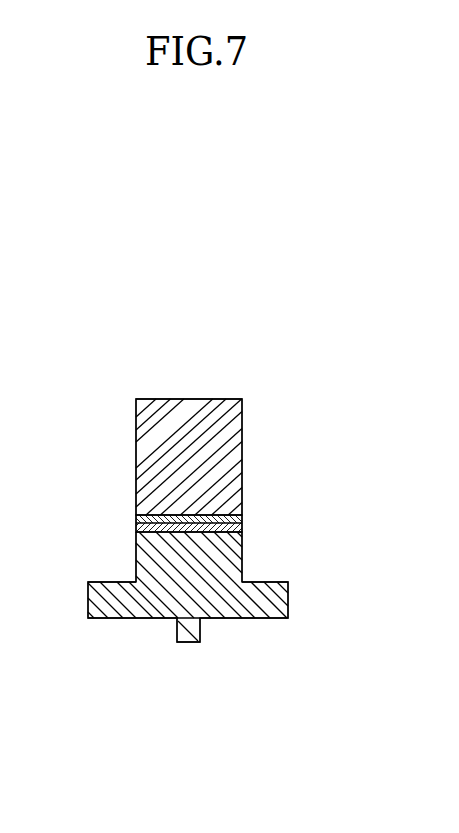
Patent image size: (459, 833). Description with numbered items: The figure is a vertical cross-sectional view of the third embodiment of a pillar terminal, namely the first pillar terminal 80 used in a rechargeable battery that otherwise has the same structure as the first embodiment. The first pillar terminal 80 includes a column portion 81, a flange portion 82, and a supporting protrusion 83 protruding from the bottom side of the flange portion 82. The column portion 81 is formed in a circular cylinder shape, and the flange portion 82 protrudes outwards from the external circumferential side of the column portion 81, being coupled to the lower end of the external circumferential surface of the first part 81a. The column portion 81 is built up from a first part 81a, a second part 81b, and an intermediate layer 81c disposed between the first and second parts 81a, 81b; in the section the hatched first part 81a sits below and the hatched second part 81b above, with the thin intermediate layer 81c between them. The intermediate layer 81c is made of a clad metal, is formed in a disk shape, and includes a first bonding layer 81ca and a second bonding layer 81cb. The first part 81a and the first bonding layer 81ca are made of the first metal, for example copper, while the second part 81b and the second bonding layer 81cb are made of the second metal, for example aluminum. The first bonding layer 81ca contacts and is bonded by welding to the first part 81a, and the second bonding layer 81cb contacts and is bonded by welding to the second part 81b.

The first pillar terminal 80 is at (274, 382).
The column portion 81 is at (333, 423).
The first part 81a is at (228, 551).
The second part 81b is at (228, 434).
The intermediate layer 81c is at (250, 517).
The first bonding layer 81ca is at (150, 528).
The second bonding layer 81cb is at (151, 518).
The flange portion 82 is at (275, 598).
The supporting protrusion 83 is at (188, 630).